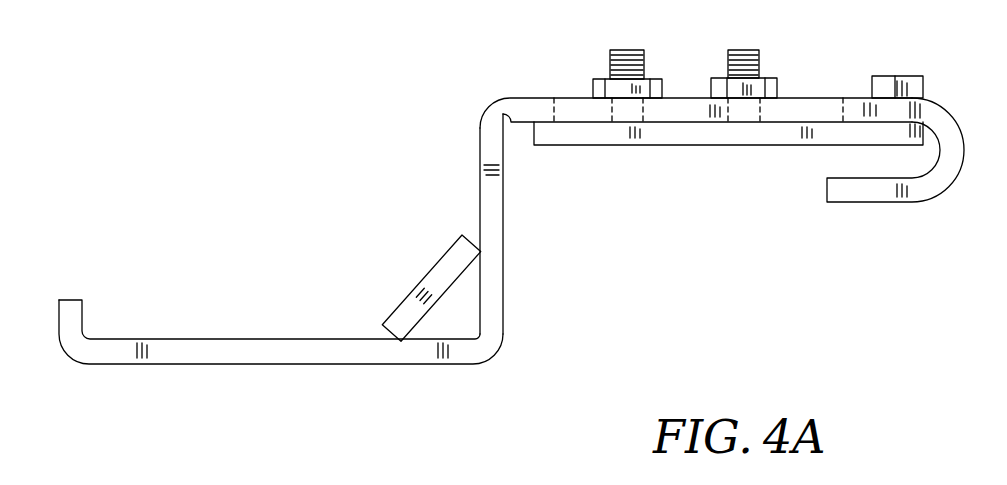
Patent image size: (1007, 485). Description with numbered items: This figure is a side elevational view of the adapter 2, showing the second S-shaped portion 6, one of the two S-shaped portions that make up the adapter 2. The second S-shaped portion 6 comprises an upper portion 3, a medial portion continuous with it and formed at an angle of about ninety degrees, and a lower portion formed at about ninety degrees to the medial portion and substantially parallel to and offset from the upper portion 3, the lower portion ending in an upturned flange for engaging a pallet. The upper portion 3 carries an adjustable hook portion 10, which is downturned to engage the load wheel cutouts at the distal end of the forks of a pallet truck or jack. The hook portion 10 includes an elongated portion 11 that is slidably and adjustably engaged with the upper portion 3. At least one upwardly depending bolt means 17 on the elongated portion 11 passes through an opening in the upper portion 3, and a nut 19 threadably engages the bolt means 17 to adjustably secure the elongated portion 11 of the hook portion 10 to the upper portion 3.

The adapter 2 is at (346, 212).
The upper portion 3 is at (553, 97).
The second S-shaped portion 6 is at (503, 200).
The hook portion 10 is at (852, 203).
The elongated portion 11 is at (628, 146).
The bolt means 17 is at (750, 50).
The nut 19 is at (777, 78).